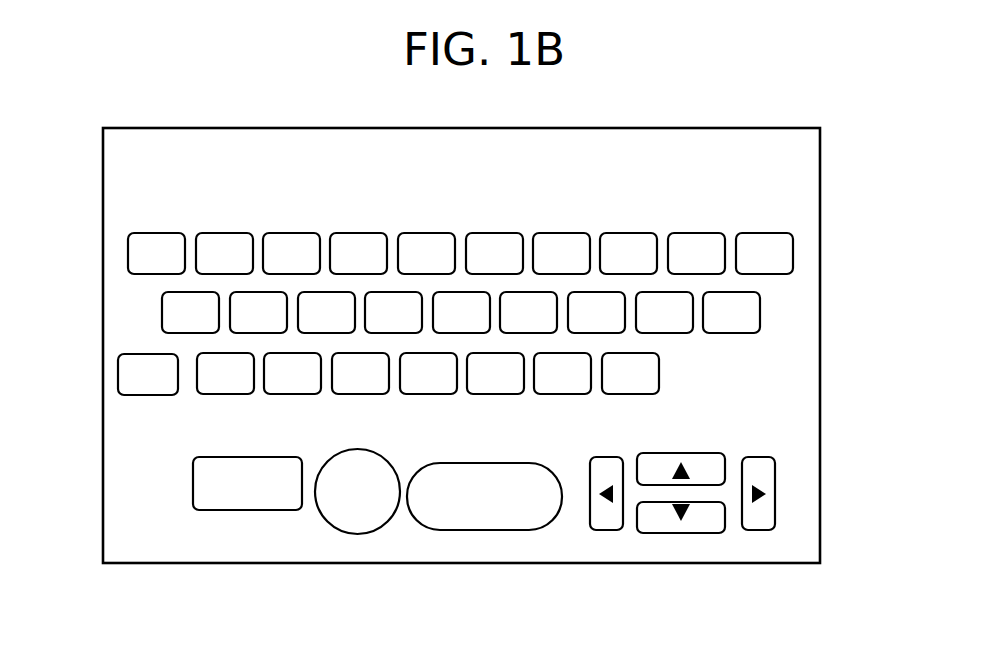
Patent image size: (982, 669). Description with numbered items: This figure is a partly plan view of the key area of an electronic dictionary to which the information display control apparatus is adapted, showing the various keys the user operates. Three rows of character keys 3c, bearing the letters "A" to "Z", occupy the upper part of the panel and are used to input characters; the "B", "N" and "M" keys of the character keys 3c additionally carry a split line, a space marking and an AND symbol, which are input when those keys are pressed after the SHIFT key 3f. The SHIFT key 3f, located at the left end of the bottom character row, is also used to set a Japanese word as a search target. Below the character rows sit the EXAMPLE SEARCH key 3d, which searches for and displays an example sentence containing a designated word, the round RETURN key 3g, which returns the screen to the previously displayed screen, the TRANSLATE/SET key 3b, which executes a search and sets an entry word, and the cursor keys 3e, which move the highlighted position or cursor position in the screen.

The character keys 3c is at (793, 248).
The SHIFT key 3f is at (118, 377).
The EXAMPLE SEARCH key 3d is at (240, 510).
The RETURN key 3g is at (352, 534).
The TRANSLATE/SET key 3b is at (487, 530).
The cursor keys 3e is at (680, 533).